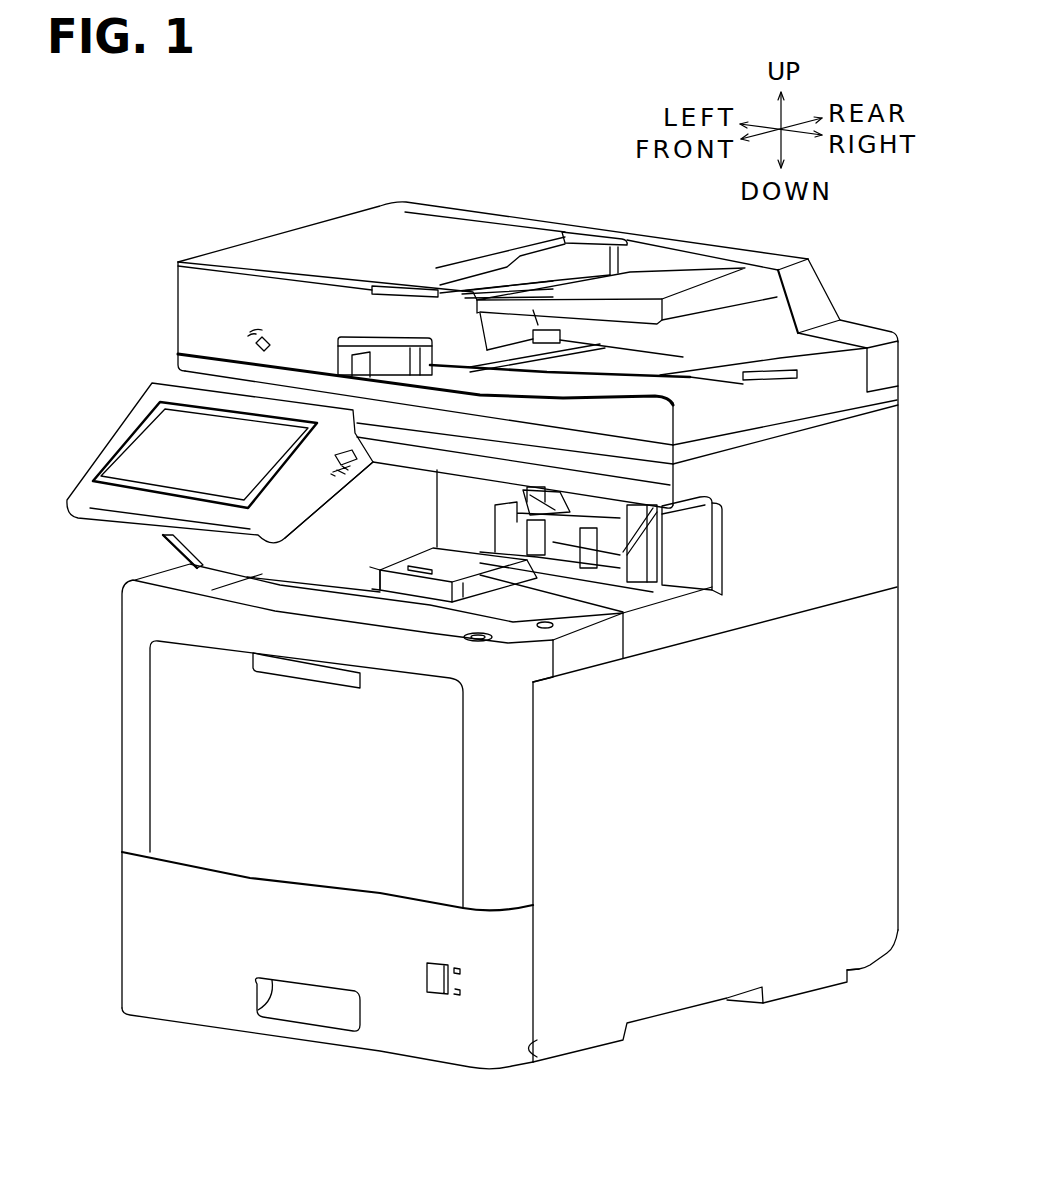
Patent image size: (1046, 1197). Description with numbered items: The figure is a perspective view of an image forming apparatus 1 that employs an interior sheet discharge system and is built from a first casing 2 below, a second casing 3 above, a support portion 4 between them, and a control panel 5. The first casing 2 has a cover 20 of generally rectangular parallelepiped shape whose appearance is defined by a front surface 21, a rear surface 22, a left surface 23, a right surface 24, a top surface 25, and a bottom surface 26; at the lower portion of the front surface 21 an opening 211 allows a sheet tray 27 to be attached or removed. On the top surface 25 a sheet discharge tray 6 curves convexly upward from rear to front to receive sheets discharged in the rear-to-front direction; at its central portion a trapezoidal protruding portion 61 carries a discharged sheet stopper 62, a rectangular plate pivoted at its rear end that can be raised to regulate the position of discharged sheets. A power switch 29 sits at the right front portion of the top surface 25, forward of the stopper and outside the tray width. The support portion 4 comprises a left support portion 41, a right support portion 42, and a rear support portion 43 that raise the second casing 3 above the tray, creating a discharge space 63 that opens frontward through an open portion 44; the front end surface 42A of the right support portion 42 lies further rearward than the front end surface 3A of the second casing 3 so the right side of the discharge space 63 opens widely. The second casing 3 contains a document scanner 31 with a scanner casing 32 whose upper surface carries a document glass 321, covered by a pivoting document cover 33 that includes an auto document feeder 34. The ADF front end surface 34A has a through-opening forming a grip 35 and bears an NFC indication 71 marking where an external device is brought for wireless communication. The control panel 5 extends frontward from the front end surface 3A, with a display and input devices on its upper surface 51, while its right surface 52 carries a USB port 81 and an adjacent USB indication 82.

The image forming apparatus 1 is at (146, 165).
The first casing 2 is at (97, 699).
The second casing 3 is at (173, 251).
The front end surface of the second casing 3A is at (490, 448).
The support portion 4 is at (896, 553).
The control panel 5 is at (128, 397).
The sheet discharge tray 6 is at (355, 570).
The cover 20 is at (109, 737).
The front surface 21 is at (133, 785).
The rear surface 22 is at (898, 707).
The left surface 23 is at (119, 647).
The right surface 24 is at (883, 780).
The top surface 25 is at (618, 604).
The bottom surface 26 is at (813, 995).
The sheet tray 27 is at (172, 1000).
The power switch 29 is at (558, 627).
The document scanner 31 is at (169, 349).
The scanner casing 32 is at (888, 426).
The document glass 321 is at (888, 386).
The document cover 33 is at (866, 332).
The auto document feeder 34 is at (346, 236).
The front end surface of the ADF 34A is at (202, 303).
The grip 35 is at (381, 340).
The left support portion 41 is at (203, 553).
The right support portion 42 is at (898, 527).
The front end surface of the right support portion 42A is at (690, 518).
The rear support portion 43 is at (898, 487).
The open portion 44 is at (655, 574).
The upper surface of the control panel 51 is at (112, 447).
The right surface of the control panel 52 is at (297, 508).
The protruding portion 61 is at (503, 590).
The discharged sheet stopper 62 is at (471, 552).
The discharge space 63 is at (441, 527).
The NFC indication 71 is at (271, 337).
The USB port 81 is at (369, 471).
The USB indication 82 is at (350, 478).
The opening 211 is at (555, 1058).